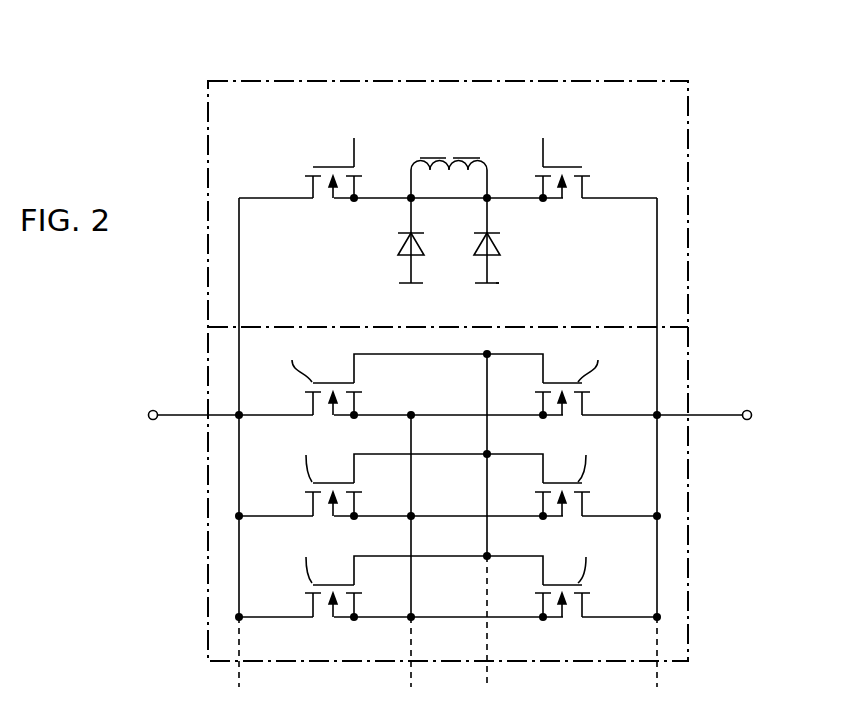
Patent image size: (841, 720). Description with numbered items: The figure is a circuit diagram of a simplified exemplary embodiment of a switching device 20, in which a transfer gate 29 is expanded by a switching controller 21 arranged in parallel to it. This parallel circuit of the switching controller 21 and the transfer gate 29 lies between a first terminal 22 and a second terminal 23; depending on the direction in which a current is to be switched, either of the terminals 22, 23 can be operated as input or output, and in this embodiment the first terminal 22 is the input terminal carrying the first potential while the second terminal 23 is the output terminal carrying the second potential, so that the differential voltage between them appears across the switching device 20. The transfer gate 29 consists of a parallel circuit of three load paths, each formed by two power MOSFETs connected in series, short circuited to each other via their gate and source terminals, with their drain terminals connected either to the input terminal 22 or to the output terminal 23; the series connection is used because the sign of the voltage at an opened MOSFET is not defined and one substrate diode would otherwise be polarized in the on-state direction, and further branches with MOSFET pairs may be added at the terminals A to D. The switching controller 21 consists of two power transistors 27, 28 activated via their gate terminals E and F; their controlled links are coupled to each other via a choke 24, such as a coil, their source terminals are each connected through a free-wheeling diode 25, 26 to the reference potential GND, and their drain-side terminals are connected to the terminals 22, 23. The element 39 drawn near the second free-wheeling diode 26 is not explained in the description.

The switching device 20 is at (170, 88).
The switching controller 21 is at (683, 191).
The first terminal 22 is at (148, 414).
The second terminal 23 is at (752, 414).
The choke 24 is at (450, 160).
The free-wheeling diode 25 is at (398, 244).
The free-wheeling diode 26 is at (500, 245).
The power transistor 27 is at (310, 169).
The power transistor 28 is at (590, 172).
The transfer gate 29 is at (683, 521).
The terminal node 39 is at (497, 284).